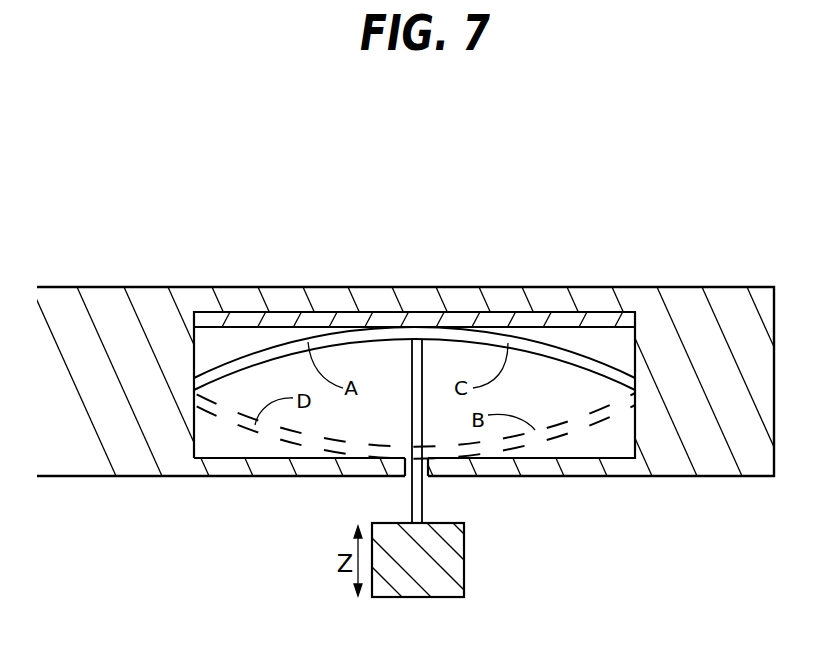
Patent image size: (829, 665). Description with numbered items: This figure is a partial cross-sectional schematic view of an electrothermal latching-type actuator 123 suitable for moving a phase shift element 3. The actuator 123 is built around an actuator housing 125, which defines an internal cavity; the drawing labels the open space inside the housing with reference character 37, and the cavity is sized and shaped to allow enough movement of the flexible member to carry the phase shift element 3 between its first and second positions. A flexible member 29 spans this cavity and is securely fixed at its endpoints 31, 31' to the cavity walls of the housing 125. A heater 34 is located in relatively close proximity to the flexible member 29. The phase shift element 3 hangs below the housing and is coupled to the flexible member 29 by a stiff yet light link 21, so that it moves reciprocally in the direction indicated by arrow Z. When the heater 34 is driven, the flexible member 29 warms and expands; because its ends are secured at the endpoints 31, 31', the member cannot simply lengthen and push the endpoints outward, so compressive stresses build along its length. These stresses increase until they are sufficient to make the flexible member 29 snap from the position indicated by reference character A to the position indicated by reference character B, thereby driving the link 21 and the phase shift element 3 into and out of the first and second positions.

The phase shift element 3 is at (464, 575).
The link 21 is at (412, 488).
The flexible member 29 is at (483, 340).
The endpoint 31 is at (148, 477).
The endpoint 31' is at (684, 477).
The heater 34 is at (205, 316).
The cavity 37 is at (600, 356).
The electrothermal latching-type actuator 123 is at (426, 380).
The actuator housing 125 is at (102, 285).